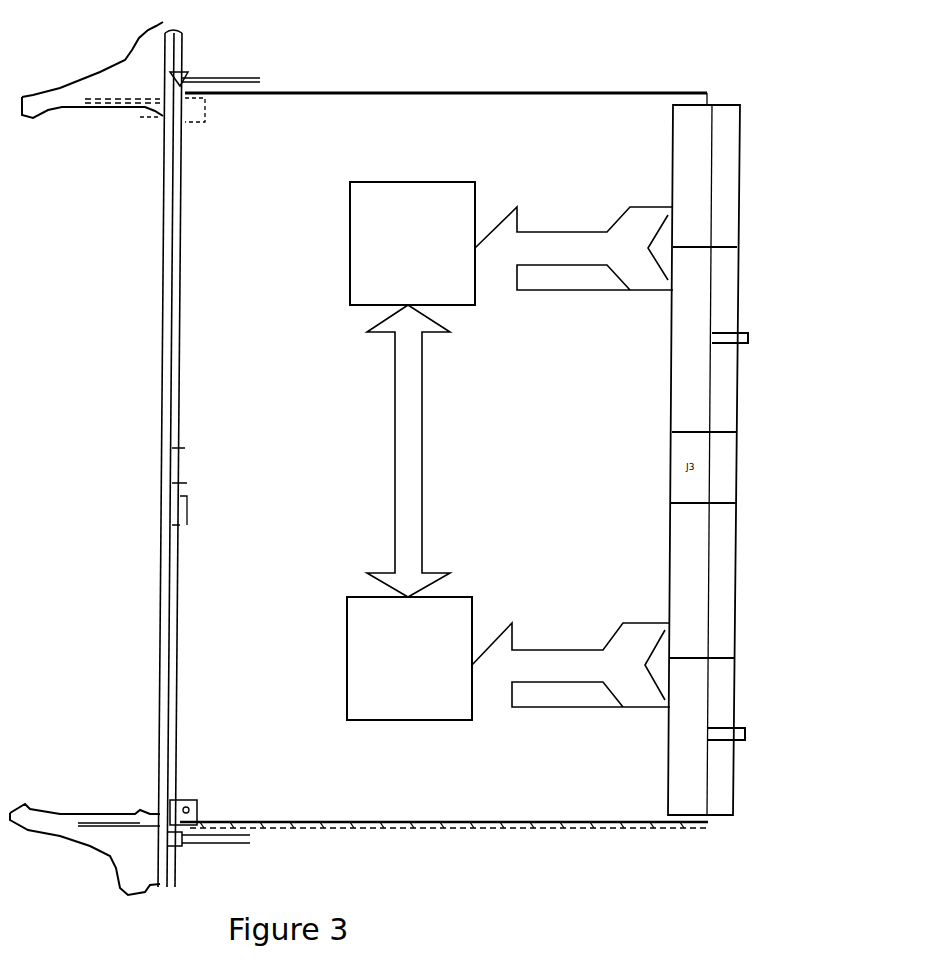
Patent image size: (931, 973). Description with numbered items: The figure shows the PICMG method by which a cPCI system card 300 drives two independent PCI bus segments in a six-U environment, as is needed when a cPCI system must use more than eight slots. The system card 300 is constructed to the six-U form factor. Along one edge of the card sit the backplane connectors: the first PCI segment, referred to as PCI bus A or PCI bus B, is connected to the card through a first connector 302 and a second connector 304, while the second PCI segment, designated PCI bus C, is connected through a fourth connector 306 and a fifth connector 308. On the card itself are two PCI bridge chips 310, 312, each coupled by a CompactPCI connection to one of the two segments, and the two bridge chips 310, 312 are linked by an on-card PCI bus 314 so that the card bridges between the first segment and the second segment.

The system card 300 is at (433, 68).
The connector J1 302 is at (707, 701).
The connector J2 304 is at (710, 577).
The connector J4 306 is at (713, 300).
The connector J5 308 is at (715, 168).
The PCI bridge chip 310 is at (350, 230).
The PCI bridge chip 312 is at (347, 660).
The PCI bus 314 is at (395, 475).